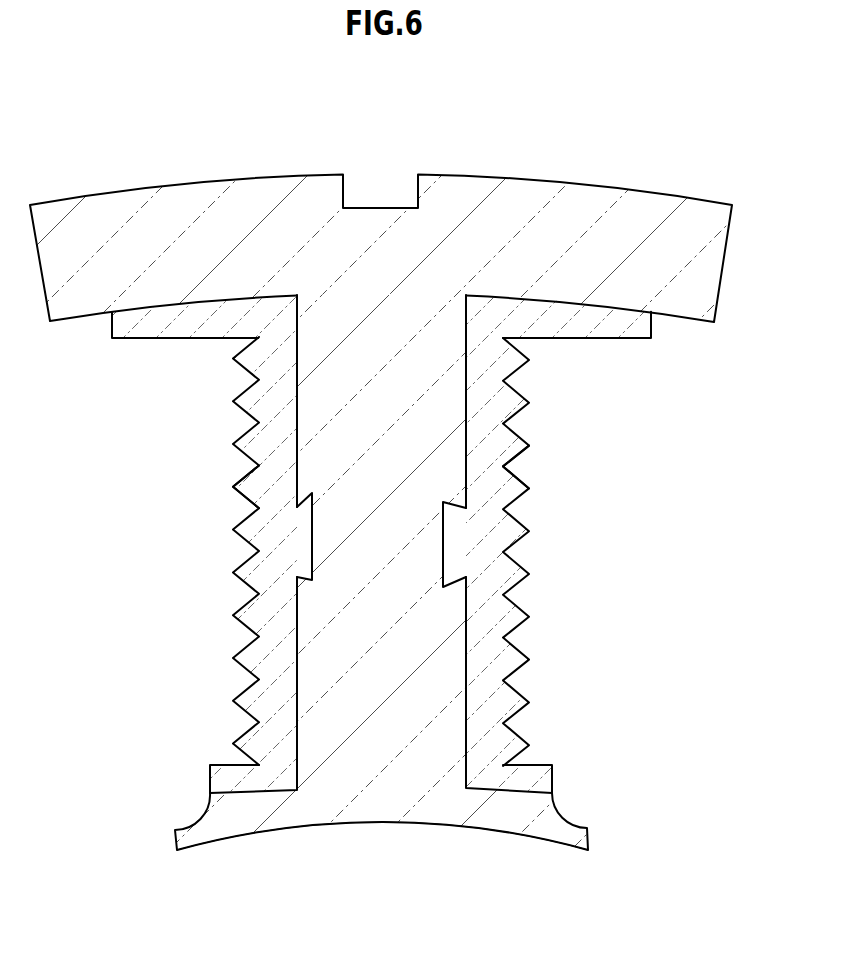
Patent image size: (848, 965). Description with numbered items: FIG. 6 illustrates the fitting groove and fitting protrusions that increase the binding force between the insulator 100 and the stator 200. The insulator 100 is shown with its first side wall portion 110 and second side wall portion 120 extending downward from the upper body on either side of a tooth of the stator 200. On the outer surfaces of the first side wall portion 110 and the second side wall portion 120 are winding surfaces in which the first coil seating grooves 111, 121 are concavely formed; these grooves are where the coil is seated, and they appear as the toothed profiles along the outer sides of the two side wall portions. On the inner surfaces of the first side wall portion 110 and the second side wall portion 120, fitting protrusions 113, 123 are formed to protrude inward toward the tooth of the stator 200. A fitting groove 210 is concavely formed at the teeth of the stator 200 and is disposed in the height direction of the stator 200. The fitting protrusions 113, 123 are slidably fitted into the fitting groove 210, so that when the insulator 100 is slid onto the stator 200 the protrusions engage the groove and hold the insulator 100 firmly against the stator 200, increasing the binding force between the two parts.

The insulator 100 is at (556, 688).
The first side wall portion 110 is at (490, 405).
The first coil seating groove 111 is at (525, 476).
The fitting protrusion 113 is at (443, 540).
The second side wall portion 120 is at (233, 401).
The first coil seating groove 121 is at (233, 480).
The fitting protrusion 123 is at (305, 544).
The stator 200 is at (577, 228).
The fitting groove 210 is at (440, 545).